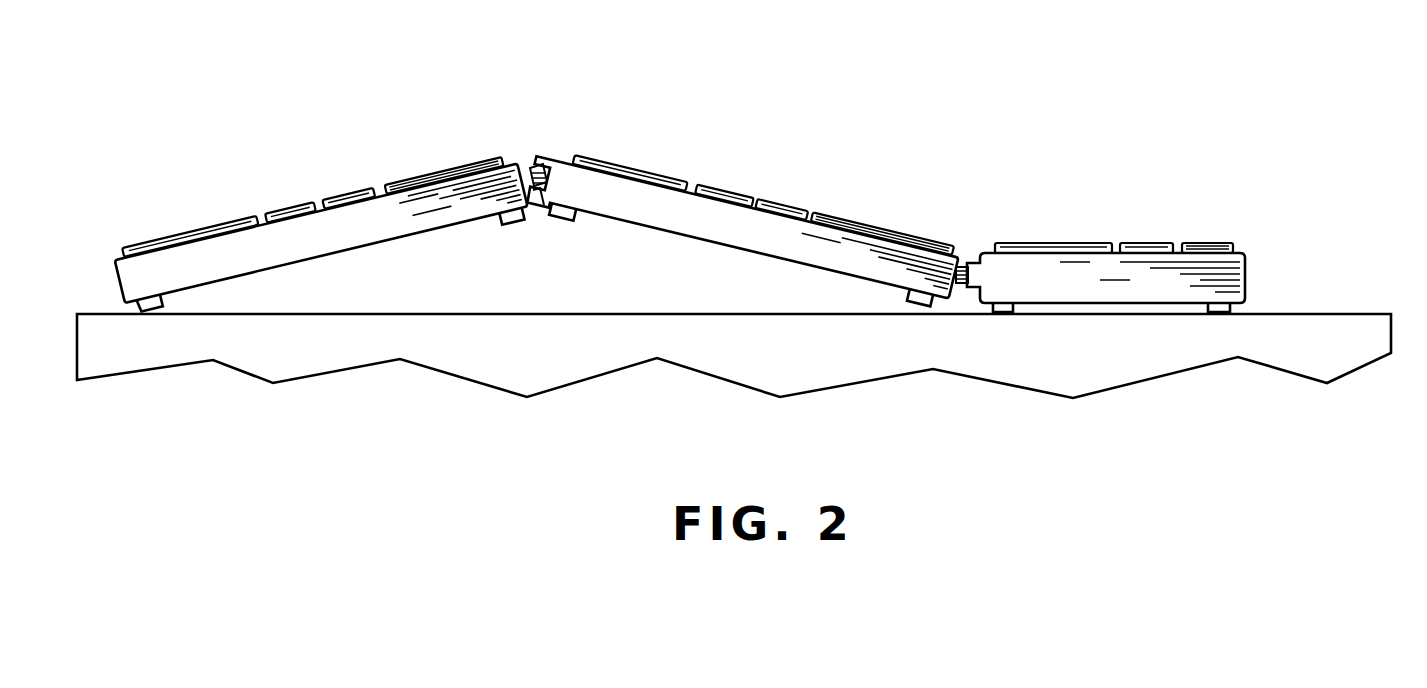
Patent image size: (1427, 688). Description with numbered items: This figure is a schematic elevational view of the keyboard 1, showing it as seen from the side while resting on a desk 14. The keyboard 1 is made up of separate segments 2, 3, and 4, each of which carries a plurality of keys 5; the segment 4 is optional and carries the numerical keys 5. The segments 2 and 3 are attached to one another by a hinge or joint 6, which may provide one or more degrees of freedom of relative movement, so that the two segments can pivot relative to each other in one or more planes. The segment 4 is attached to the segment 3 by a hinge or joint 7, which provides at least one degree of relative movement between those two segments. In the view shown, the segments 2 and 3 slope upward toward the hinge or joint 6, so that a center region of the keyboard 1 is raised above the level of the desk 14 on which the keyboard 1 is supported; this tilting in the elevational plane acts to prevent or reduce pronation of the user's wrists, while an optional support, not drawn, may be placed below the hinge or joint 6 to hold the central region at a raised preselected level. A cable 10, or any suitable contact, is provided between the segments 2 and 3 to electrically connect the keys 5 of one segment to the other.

The keyboard 1 is at (1262, 222).
The segment 2 is at (330, 232).
The segment 3 is at (778, 231).
The segment 4 is at (1108, 280).
The keys 5 is at (194, 230).
The hinge or joint 6 is at (535, 212).
The hinge or joint 7 is at (980, 253).
The cable 10 is at (528, 152).
The desk 14 is at (1333, 313).